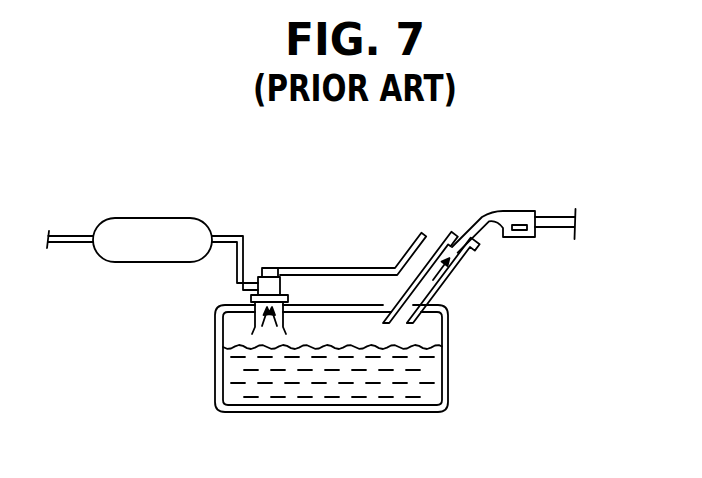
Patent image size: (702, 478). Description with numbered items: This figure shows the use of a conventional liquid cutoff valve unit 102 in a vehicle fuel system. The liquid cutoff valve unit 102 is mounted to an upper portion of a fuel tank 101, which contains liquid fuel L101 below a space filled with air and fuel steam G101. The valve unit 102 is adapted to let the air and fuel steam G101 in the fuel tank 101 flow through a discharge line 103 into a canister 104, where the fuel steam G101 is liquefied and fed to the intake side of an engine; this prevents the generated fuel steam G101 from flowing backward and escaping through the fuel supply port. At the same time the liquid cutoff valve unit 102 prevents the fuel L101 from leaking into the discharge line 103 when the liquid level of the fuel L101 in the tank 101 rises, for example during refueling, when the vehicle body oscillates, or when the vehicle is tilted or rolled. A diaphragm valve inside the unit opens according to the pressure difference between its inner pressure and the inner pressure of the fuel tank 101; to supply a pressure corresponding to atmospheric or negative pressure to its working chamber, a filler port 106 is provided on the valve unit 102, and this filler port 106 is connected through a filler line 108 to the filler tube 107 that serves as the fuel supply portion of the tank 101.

The fuel tank 101 is at (450, 363).
The liquid cutoff valve unit 102 is at (252, 296).
The discharge line 103 is at (245, 252).
The canister 104 is at (166, 218).
The filler port 106 is at (284, 267).
The filler tube 107 is at (456, 264).
The filler line 108 is at (377, 268).
The fuel steam G101 is at (258, 328).
The fuel L101 is at (397, 392).